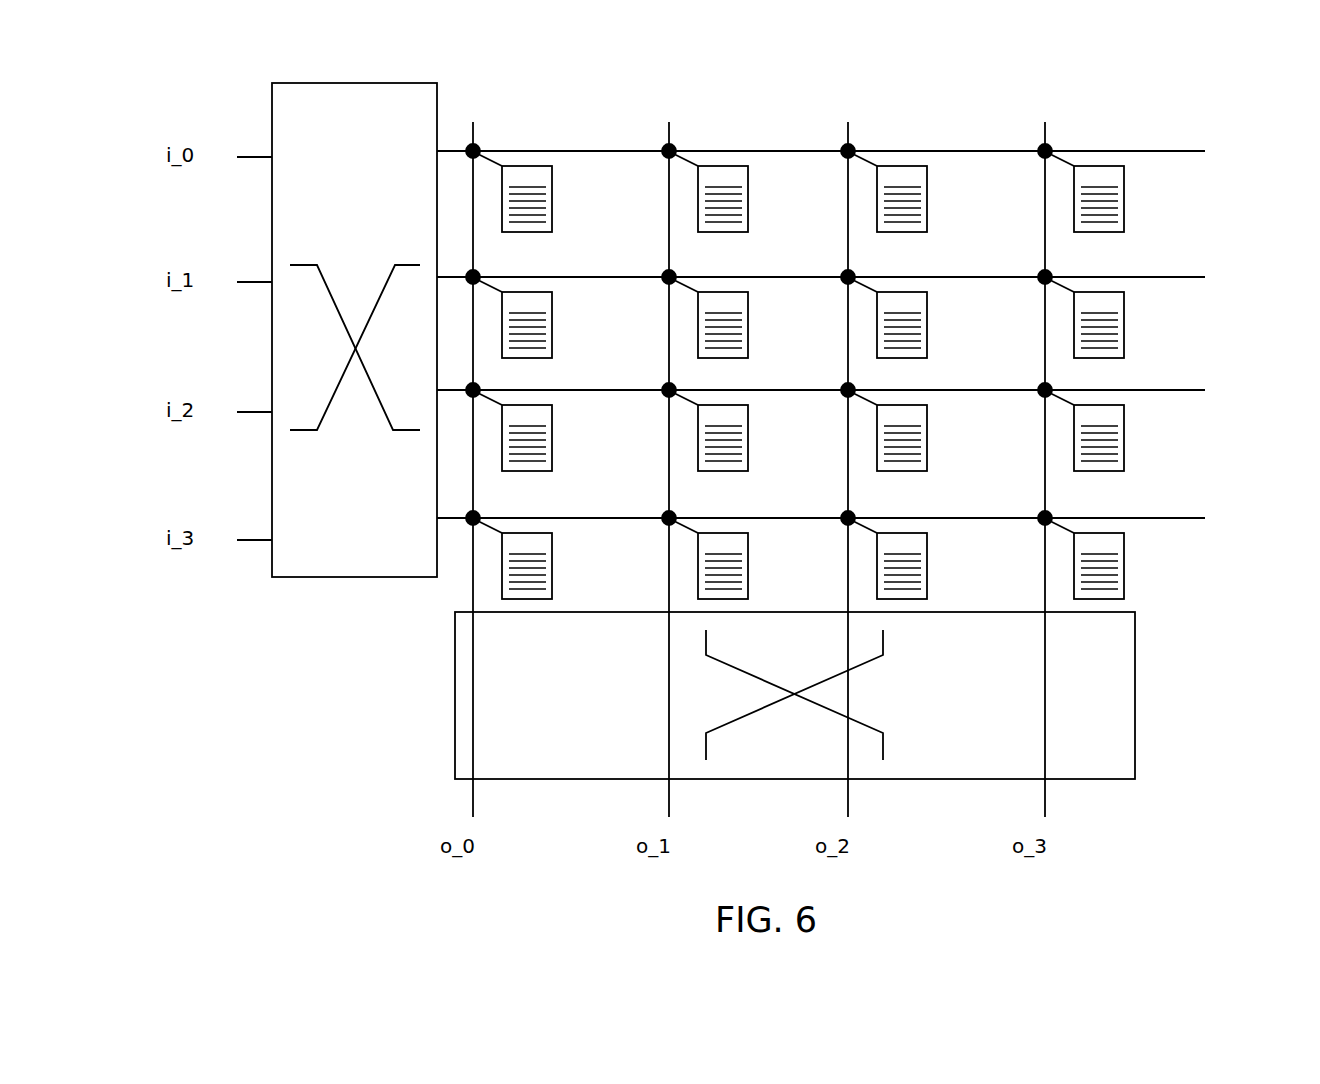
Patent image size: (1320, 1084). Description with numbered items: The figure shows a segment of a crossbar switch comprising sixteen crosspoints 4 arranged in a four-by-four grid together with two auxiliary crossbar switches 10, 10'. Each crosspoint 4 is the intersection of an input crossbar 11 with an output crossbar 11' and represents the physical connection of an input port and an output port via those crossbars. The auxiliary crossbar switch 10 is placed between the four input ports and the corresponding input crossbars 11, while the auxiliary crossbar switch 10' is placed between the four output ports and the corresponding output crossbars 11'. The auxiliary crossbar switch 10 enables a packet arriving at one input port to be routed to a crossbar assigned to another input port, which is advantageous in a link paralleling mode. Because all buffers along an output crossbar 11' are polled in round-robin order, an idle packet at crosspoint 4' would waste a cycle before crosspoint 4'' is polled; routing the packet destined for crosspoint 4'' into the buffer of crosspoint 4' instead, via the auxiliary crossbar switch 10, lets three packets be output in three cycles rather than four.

The crosspoint 4 is at (1081, 149).
The crosspoint 4' is at (474, 502).
The crosspoint 4'' is at (480, 586).
The auxiliary crossbar switch 10 is at (354, 416).
The auxiliary crossbar switch 10' is at (842, 695).
The input crossbar 11 is at (821, 104).
The output crossbar 11' is at (1130, 469).